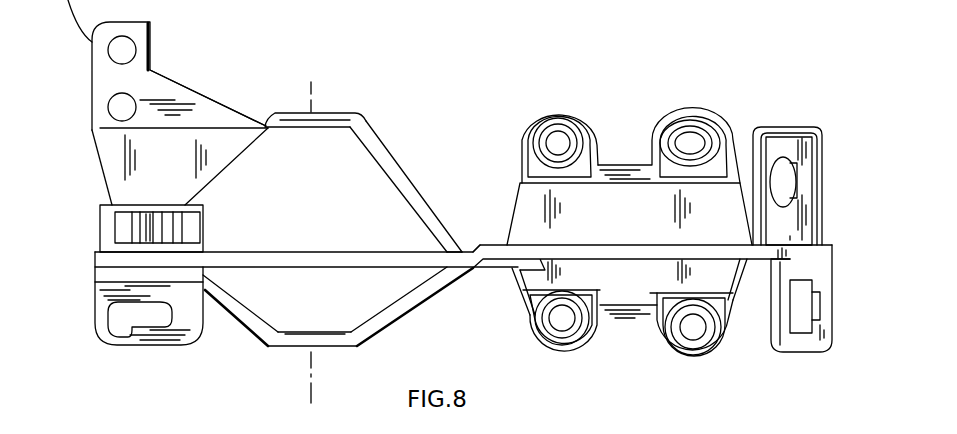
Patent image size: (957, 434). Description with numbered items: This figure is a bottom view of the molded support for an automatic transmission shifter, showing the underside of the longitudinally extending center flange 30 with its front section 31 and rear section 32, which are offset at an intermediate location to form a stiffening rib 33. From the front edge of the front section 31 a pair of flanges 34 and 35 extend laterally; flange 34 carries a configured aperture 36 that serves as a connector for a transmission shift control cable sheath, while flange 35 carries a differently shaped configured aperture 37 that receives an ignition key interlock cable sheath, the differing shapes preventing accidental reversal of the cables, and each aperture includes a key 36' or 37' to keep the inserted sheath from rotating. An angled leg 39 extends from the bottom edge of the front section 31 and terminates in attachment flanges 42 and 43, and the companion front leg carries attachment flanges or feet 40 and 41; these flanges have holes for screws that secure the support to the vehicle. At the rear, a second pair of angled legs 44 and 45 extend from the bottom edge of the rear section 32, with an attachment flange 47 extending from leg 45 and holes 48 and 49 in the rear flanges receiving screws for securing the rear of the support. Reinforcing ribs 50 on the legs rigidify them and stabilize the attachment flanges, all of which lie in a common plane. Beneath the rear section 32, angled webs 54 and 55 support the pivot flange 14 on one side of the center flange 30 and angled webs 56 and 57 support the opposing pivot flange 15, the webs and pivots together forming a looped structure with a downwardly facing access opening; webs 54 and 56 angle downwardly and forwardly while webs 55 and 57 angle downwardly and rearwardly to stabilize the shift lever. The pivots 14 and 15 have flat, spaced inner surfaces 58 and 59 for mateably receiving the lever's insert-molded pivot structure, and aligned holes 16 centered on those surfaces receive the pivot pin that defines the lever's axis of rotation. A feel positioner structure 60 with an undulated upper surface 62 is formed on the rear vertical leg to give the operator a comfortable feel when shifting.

The pivot flange 14 is at (337, 348).
The pivot flange 15 is at (350, 113).
The aligned holes 16 is at (313, 112).
The center flange 30 is at (396, 249).
The front section 31 is at (577, 245).
The rear section 32 is at (283, 252).
The stiffening rib 33 is at (470, 248).
The flange 34 is at (810, 128).
The flange 35 is at (765, 348).
The configured aperture 36 is at (778, 129).
The key 36' is at (838, 185).
The configured aperture 37 is at (802, 346).
The key 37' is at (855, 288).
The angled leg 39 is at (637, 283).
The attachment flange 40 is at (566, 108).
The attachment flange 41 is at (658, 115).
The attachment flange 42 is at (558, 352).
The attachment flange 43 is at (683, 362).
The angled leg 44 is at (100, 160).
The angled leg 45 is at (95, 256).
The attachment flange 47 is at (127, 348).
The hole 48 is at (122, 107).
The hole 49 is at (150, 313).
The reinforcing ribs 50 is at (217, 100).
The angled web 54 is at (233, 322).
The angled web 55 is at (418, 313).
The angled web 56 is at (240, 160).
The angled web 57 is at (392, 155).
The inner surface 58 is at (298, 331).
The inner surface 59 is at (328, 132).
The feel positioner structure 60 is at (205, 222).
The undulated upper surface 62 is at (155, 225).